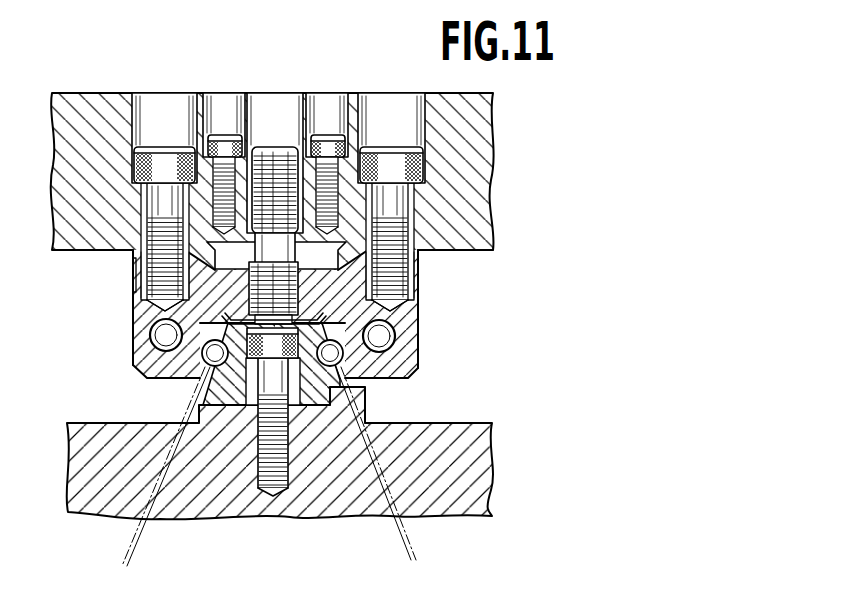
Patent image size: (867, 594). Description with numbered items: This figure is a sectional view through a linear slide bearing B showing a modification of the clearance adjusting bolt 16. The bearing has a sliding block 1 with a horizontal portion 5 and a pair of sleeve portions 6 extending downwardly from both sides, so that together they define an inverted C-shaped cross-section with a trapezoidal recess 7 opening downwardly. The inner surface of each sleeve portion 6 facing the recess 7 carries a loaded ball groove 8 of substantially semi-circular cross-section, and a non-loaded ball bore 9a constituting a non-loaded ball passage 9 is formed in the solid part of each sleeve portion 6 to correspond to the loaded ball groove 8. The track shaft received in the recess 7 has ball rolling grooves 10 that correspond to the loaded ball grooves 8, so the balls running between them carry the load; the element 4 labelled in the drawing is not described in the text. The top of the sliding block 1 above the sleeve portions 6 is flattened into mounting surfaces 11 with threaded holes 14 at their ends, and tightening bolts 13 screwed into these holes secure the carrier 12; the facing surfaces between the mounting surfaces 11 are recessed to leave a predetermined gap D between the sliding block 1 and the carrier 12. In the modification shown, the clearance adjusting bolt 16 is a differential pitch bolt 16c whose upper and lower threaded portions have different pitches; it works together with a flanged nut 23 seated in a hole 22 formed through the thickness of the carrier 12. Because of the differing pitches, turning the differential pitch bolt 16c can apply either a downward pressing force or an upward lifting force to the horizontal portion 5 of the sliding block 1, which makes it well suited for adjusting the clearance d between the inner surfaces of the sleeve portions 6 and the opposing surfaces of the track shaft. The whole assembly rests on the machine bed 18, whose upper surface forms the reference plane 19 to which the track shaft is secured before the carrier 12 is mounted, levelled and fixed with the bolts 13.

The carrier 12 is at (82, 90).
The tightening bolts 13 is at (163, 147).
The flanged nut 23 is at (250, 145).
The hole 22 is at (305, 140).
The differential pitch bolt 16c is at (296, 193).
The clearance adjusting bolt 16 is at (273, 288).
The horizontal portion 5 is at (317, 236).
The mounting surfaces 11 is at (178, 243).
The gap D is at (183, 218).
The linear slide bearing B is at (131, 259).
The threaded holes 14 is at (147, 279).
The sliding block 1 is at (131, 303).
The non-loaded ball bore 9a is at (275, 337).
The non-loaded ball passage 9 is at (150, 336).
The sleeve portions 6 is at (143, 357).
The pressure block 4 is at (176, 376).
The loaded ball groove 8 is at (206, 366).
The recess 7 is at (322, 322).
The bed 18 is at (469, 421).
The ball rolling grooves 10 is at (222, 407).
The reference plane 19 is at (236, 402).
The clearance d is at (172, 565).